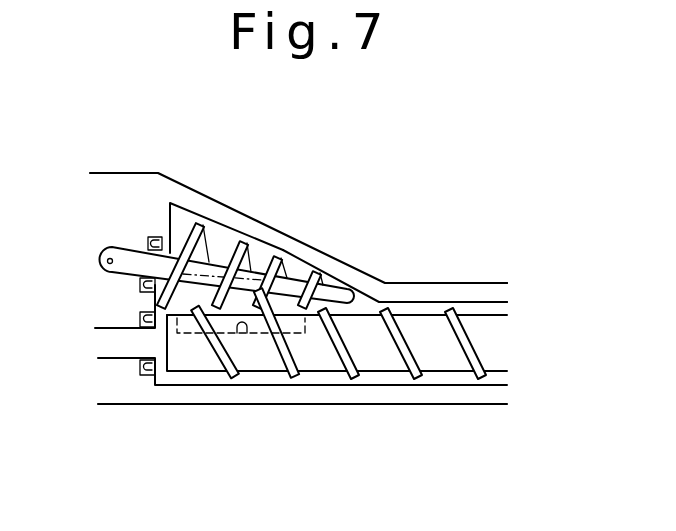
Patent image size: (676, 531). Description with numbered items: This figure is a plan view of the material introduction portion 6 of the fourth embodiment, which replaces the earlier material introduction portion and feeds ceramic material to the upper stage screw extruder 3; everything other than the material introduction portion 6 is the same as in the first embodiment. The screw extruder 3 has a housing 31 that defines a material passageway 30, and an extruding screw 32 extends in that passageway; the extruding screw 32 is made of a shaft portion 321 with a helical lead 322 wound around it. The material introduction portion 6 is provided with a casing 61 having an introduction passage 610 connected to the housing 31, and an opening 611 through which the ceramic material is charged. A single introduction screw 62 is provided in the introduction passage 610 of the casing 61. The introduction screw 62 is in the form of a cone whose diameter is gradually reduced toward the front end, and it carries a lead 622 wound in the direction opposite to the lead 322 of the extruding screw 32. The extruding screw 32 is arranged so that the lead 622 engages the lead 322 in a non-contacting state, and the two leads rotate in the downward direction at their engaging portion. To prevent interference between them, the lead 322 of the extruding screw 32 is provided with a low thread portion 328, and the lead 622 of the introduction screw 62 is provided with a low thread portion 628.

The screw extruder 3 is at (455, 395).
The material introduction portion 6 is at (291, 224).
The material passageway 30 is at (481, 303).
The housing 31 is at (493, 402).
The extruding screw 32 is at (430, 316).
The casing 61 is at (217, 213).
The introduction screw 62 is at (140, 250).
The shaft portion 321 is at (443, 352).
The helical lead 322 is at (408, 363).
The low thread portion 328 is at (283, 343).
The introduction passage 610 is at (313, 268).
The opening 611 is at (237, 337).
The lead 622 is at (172, 293).
The low thread portion 628 is at (256, 262).